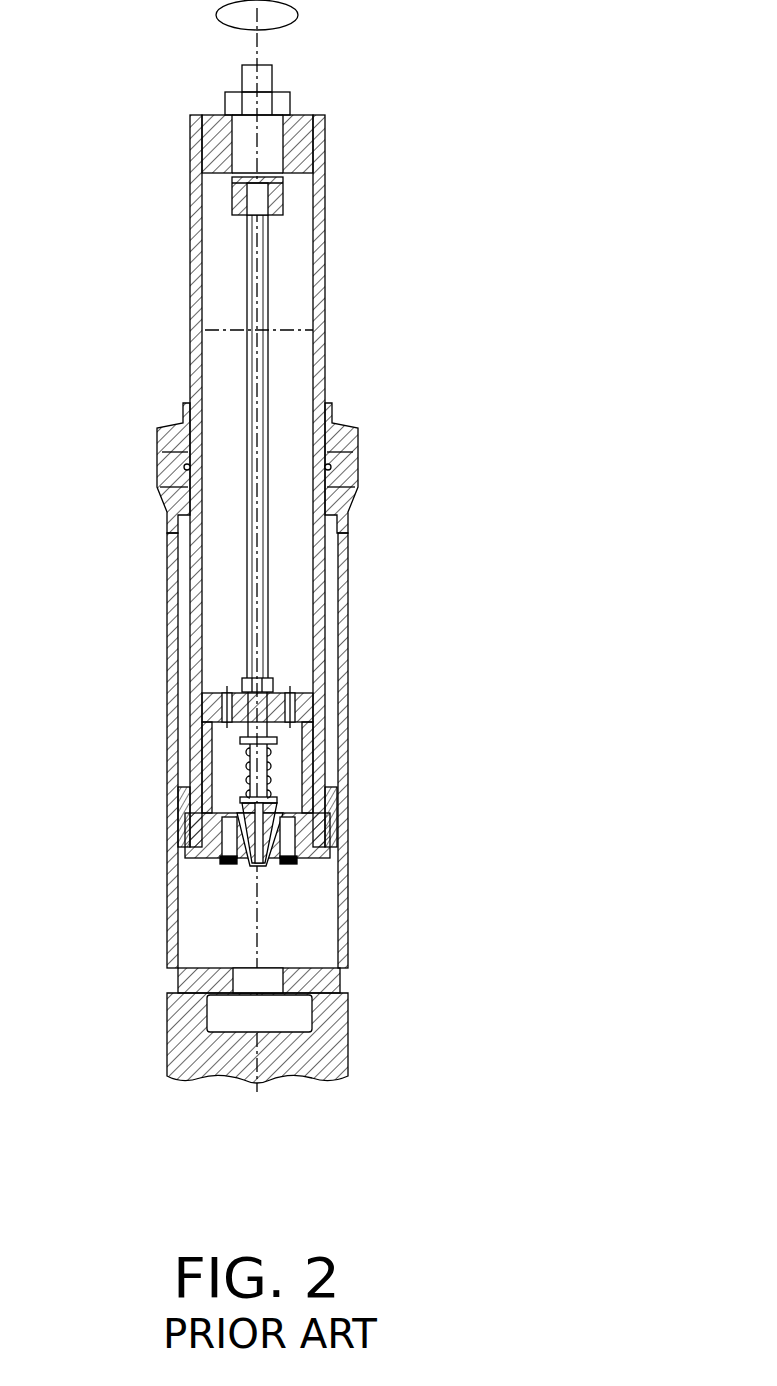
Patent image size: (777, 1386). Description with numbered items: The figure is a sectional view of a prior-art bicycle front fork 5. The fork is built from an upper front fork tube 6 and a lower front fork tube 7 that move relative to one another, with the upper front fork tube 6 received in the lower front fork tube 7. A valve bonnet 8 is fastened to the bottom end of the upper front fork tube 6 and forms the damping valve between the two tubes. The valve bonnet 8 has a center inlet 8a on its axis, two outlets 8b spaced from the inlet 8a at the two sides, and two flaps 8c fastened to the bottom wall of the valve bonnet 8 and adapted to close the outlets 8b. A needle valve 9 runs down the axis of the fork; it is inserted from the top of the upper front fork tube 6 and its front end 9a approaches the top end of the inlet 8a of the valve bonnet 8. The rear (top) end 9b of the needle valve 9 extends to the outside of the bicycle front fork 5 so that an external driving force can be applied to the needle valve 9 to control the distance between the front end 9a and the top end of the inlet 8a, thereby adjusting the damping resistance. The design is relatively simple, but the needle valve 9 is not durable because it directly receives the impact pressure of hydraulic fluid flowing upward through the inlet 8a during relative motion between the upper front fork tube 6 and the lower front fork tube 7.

The bicycle front fork 5 is at (508, 182).
The upper front fork tube 6 is at (325, 263).
The lower front fork tube 7 is at (350, 580).
The valve bonnet 8 is at (330, 810).
The center inlet 8a is at (257, 870).
The outlets 8b is at (187, 848).
The flaps 8c is at (227, 863).
The needle valve 9 is at (268, 397).
The front end of the needle valve 9a is at (240, 812).
The rear (top) end of the needle valve 9b is at (242, 75).